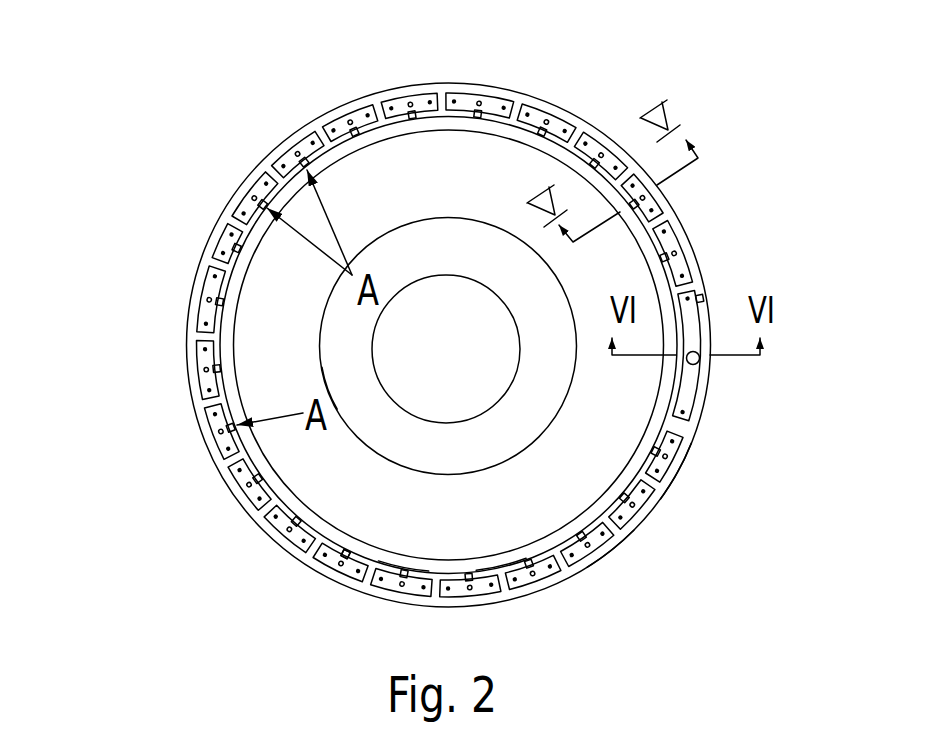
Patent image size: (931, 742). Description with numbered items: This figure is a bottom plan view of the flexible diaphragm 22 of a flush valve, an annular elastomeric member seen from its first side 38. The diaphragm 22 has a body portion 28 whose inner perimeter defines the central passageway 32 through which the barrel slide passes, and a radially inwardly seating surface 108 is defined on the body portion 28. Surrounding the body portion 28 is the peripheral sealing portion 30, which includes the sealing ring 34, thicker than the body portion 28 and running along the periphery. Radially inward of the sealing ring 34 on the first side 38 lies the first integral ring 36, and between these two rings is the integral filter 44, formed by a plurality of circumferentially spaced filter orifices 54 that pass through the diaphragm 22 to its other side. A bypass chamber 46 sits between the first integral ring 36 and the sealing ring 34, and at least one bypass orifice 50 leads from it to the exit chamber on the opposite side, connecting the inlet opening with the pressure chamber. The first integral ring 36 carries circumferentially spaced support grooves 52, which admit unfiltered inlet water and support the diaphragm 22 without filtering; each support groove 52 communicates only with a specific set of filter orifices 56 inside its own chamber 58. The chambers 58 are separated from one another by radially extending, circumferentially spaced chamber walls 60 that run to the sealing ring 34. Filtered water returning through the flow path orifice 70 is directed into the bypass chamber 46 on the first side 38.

The flexible diaphragm 22 is at (227, 173).
The body portion 28 is at (416, 240).
The peripheral sealing portion 30 is at (620, 547).
The central passageway 32 is at (487, 336).
The sealing ring 34 is at (685, 248).
The first integral ring 36 is at (560, 547).
The first side 38 is at (273, 290).
The integral filter 44 is at (333, 127).
The bypass chamber 46 is at (703, 396).
The bypass orifice 50 is at (697, 365).
The support grooves 52 is at (477, 118).
The filter orifices 54 is at (551, 568).
The set of filter orifices 56 is at (330, 565).
The chamber 58 is at (387, 582).
The chamber walls 60 is at (428, 572).
The flow path orifice 70 is at (689, 298).
The radially inwardly seating surface 108 is at (340, 395).